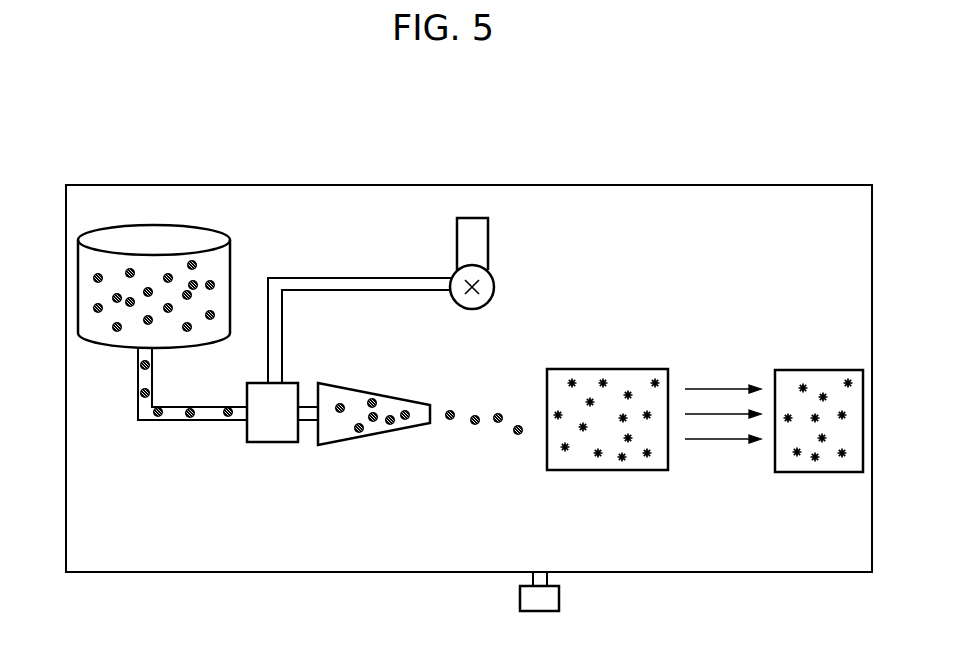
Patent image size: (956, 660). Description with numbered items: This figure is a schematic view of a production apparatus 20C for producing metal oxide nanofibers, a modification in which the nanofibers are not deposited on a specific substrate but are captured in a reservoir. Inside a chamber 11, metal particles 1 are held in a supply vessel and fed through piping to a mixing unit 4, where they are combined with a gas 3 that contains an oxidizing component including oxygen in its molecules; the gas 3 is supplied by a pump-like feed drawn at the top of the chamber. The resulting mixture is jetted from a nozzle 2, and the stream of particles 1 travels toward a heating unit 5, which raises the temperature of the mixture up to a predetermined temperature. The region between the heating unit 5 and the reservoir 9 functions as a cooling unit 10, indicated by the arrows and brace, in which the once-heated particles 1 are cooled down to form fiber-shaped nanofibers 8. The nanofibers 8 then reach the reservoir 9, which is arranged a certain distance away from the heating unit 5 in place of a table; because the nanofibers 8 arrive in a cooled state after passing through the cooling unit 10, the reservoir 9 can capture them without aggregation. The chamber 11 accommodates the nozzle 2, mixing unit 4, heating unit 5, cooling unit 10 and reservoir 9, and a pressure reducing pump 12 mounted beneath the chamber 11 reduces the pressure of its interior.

The metal particles 1 is at (214, 282).
The nozzle 2 is at (375, 425).
The gas 3 is at (497, 282).
The mixing unit 4 is at (272, 433).
The heating unit 5 is at (625, 380).
The nanofibers 8 is at (572, 380).
The reservoir 9 is at (788, 383).
The cooling unit 10 is at (667, 470).
The chamber 11 is at (722, 184).
The pressure reducing pump 12 is at (553, 601).
The production apparatus 20C is at (817, 167).